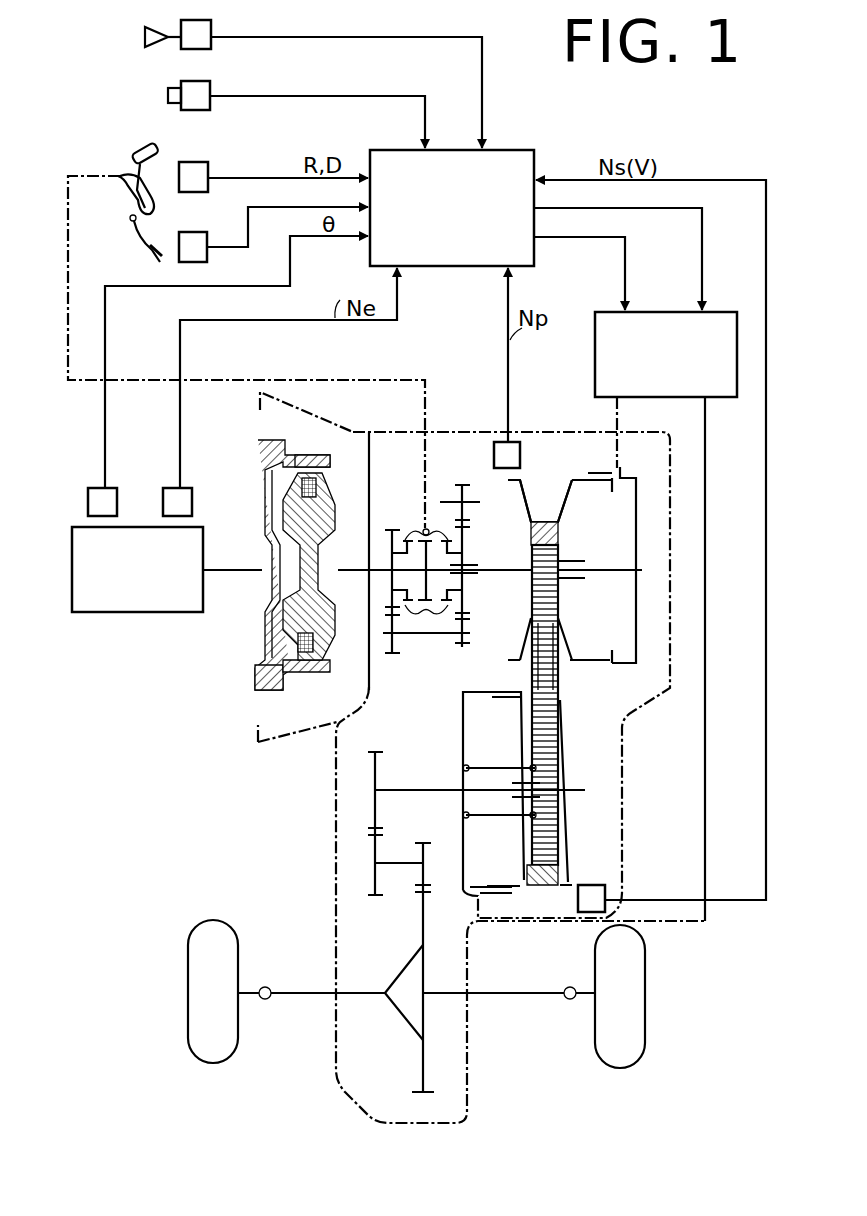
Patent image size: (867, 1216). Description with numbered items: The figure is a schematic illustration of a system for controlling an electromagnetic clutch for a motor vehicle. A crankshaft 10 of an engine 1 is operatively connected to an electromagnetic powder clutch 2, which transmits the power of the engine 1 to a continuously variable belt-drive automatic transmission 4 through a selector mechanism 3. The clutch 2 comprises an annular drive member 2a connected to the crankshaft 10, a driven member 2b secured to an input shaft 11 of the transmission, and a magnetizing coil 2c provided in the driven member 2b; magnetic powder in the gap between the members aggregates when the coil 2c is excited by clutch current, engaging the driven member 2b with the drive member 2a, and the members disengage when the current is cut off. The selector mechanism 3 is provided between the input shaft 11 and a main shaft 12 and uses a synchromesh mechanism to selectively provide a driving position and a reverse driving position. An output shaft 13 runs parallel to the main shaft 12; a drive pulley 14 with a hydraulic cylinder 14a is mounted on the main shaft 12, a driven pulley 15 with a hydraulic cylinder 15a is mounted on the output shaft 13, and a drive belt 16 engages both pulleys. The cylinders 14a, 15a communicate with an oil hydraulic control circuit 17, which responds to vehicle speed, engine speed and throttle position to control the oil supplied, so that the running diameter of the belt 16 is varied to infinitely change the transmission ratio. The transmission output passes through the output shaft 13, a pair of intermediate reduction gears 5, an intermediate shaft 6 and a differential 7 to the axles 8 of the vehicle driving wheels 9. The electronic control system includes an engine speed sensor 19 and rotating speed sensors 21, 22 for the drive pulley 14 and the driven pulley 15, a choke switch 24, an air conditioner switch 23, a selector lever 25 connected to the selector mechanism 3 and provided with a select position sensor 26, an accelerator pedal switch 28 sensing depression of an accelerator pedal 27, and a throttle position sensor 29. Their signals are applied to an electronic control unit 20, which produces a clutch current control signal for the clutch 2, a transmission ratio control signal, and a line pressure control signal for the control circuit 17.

The engine 1 is at (98, 614).
The electromagnetic powder clutch 2 is at (287, 557).
The annular drive member 2a is at (258, 455).
The driven member 2b is at (324, 524).
The magnetizing coil 2c is at (322, 470).
The selector mechanism 3 is at (413, 524).
The continuously variable belt-drive automatic transmission 4 is at (558, 492).
The intermediate reduction gears 5 is at (380, 750).
The intermediate shaft 6 is at (398, 862).
The differential 7 is at (406, 966).
The axles 8 is at (310, 975).
The vehicle driving wheels 9 is at (238, 1035).
The crankshaft 10 is at (256, 575).
The input shaft 11 is at (348, 575).
The main shaft 12 is at (506, 576).
The output shaft 13 is at (428, 775).
The drive pulley 14 is at (520, 526).
The hydraulic cylinder 14a is at (652, 540).
The driven pulley 15 is at (560, 704).
The hydraulic cylinder 15a is at (482, 716).
The drive belt 16 is at (528, 672).
The oil hydraulic control circuit 17 is at (595, 354).
The engine speed sensor 19 is at (168, 488).
The electronic control unit 20 is at (524, 146).
The rotating speed sensor 21 is at (520, 458).
The rotating speed sensor 22 is at (604, 886).
The air conditioner switch 23 is at (211, 88).
The choke switch 24 is at (212, 26).
The selector lever 25 is at (134, 156).
The select position sensor 26 is at (209, 168).
The accelerator pedal 27 is at (138, 246).
The accelerator pedal switch 28 is at (208, 238).
The throttle position sensor 29 is at (92, 488).